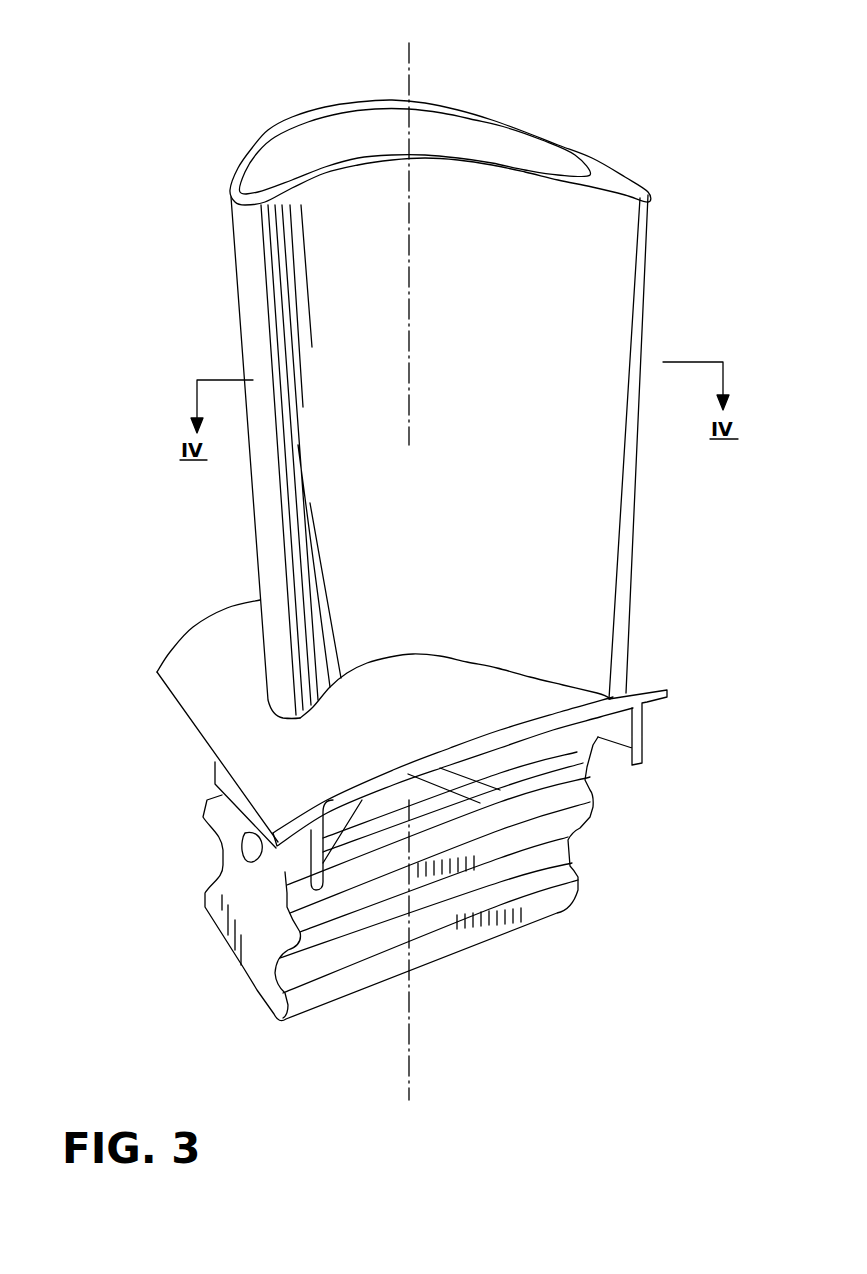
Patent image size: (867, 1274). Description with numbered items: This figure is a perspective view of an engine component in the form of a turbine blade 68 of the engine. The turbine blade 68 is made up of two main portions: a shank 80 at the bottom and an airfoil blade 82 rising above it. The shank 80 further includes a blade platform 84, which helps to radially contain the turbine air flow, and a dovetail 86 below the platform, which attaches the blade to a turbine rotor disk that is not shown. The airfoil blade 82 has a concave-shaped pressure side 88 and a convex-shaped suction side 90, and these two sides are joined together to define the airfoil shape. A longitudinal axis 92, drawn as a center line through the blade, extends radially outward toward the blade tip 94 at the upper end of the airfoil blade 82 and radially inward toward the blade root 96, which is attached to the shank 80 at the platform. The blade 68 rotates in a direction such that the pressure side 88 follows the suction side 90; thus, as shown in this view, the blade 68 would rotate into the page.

The turbine blade 68 is at (393, 550).
The shank 80 is at (563, 762).
The airfoil blade 82 is at (486, 377).
The blade platform 84 is at (223, 705).
The dovetail 86 is at (237, 880).
The pressure side 88 is at (572, 453).
The suction side 90 is at (453, 113).
The longitudinal axis 92 is at (408, 60).
The blade tip 94 is at (612, 185).
The blade root 96 is at (578, 647).